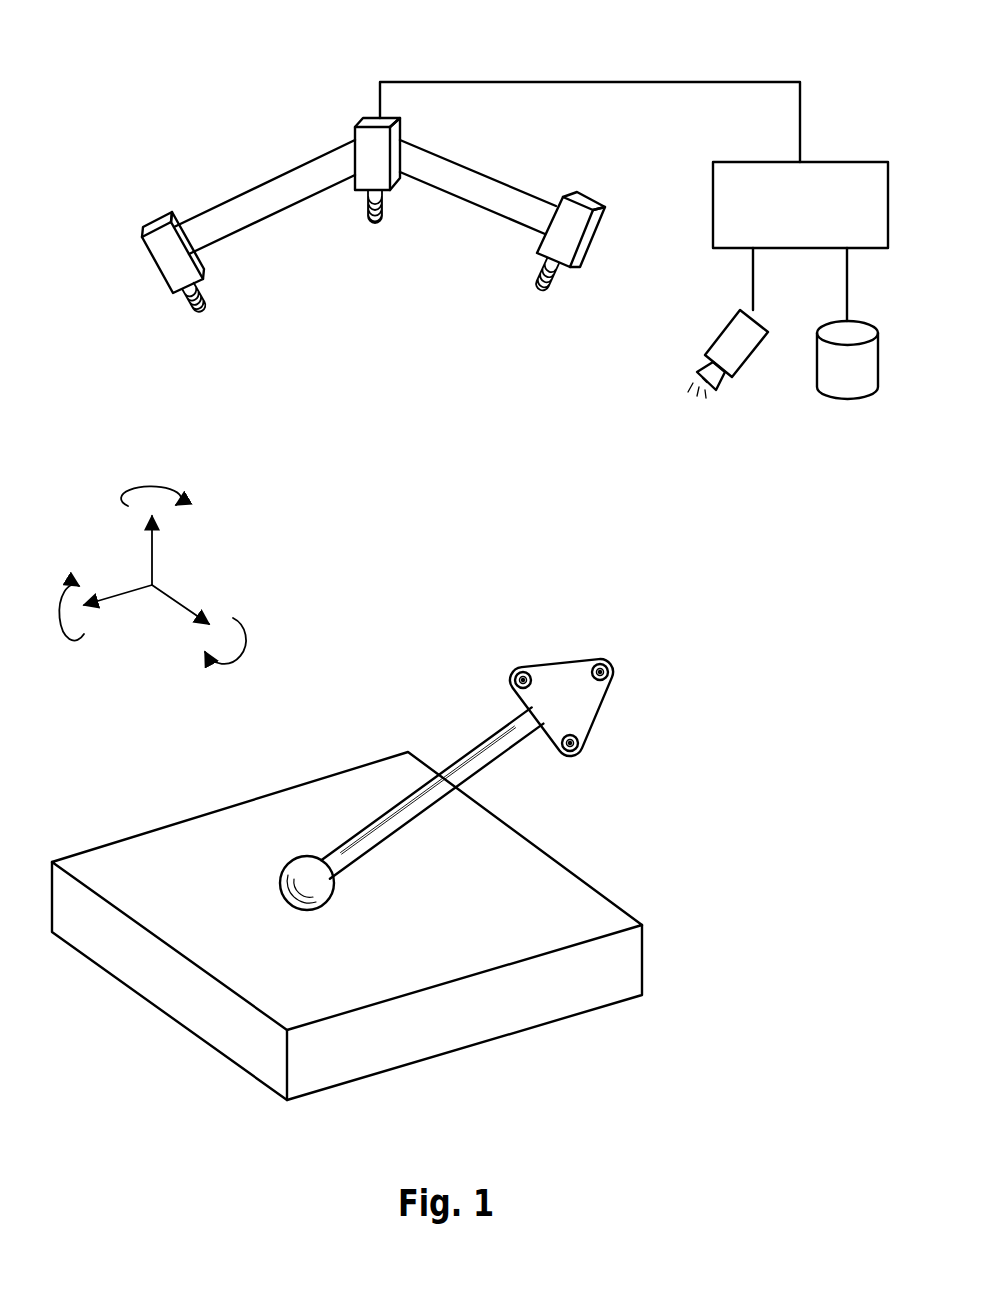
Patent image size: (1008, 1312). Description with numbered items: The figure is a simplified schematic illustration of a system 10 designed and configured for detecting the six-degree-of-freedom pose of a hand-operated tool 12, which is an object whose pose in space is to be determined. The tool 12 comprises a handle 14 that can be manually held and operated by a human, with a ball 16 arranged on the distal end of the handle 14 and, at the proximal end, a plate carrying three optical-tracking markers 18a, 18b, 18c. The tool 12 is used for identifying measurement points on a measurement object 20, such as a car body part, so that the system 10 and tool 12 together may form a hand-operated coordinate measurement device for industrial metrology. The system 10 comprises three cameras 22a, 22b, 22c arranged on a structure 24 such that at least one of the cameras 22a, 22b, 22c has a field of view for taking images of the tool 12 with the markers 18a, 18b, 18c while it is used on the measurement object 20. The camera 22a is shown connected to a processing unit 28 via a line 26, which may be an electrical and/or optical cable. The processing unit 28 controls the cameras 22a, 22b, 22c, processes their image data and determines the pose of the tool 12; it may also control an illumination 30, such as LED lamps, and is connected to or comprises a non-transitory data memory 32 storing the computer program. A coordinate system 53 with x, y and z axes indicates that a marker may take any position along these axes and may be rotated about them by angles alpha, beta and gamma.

The system 10 is at (112, 120).
The hand-operated tool 12 is at (425, 650).
The handle 14 is at (417, 807).
The ball 16 is at (320, 893).
The optical-tracking marker 18a is at (521, 672).
The optical-tracking marker 18b is at (612, 679).
The optical-tracking marker 18c is at (582, 751).
The measurement object 20 is at (545, 1012).
The camera 22a is at (368, 143).
The camera 22b is at (165, 260).
The camera 22c is at (587, 238).
The structure 24 is at (260, 200).
The line 26 is at (612, 78).
The processing unit 28 is at (847, 173).
The illumination 30 is at (738, 347).
The non-transitory data memory 32 is at (852, 380).
The coordinate system 53 is at (224, 535).